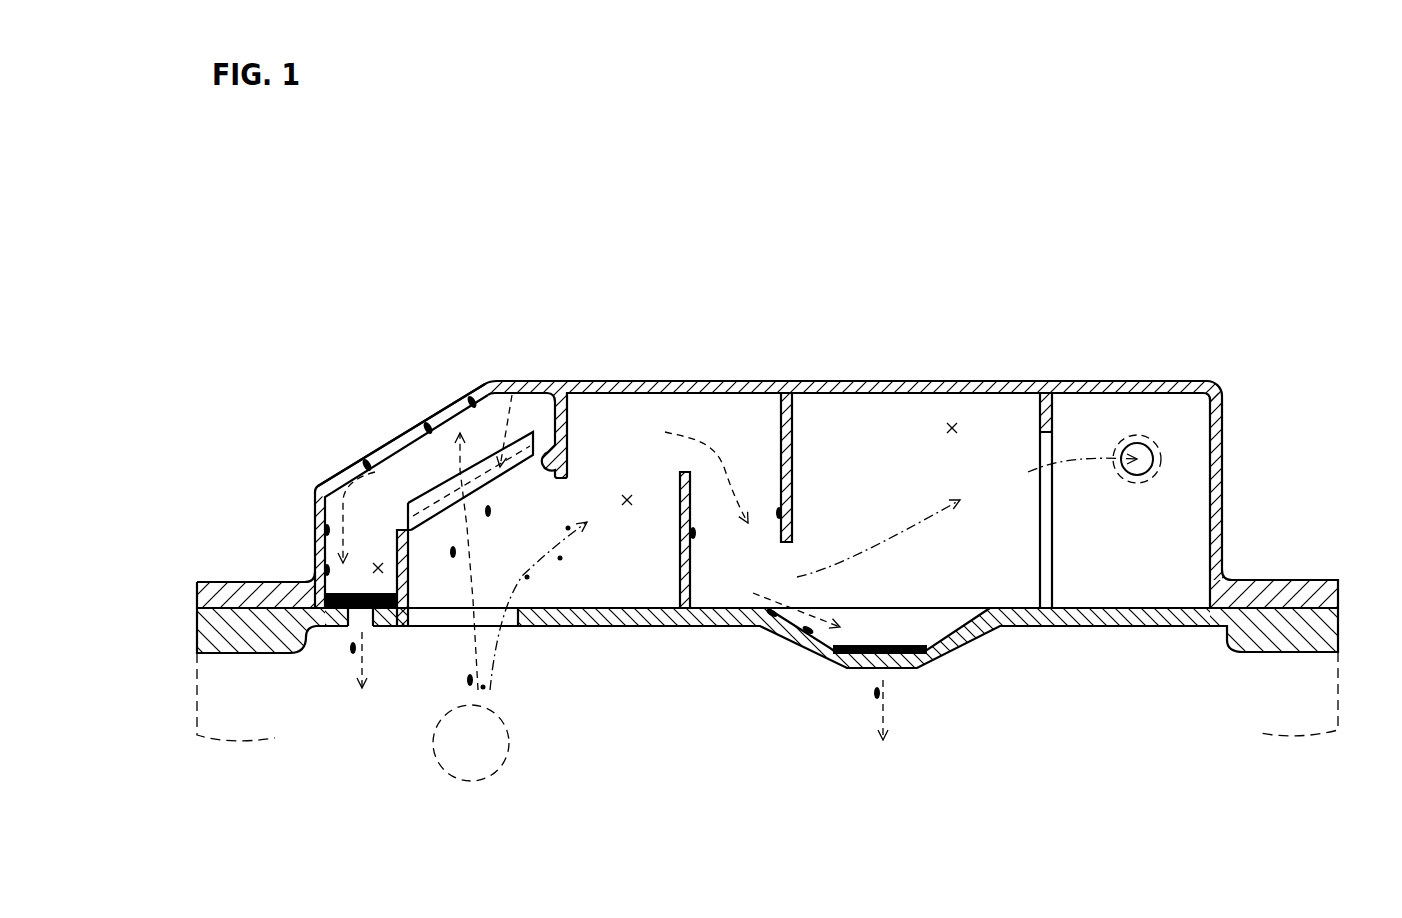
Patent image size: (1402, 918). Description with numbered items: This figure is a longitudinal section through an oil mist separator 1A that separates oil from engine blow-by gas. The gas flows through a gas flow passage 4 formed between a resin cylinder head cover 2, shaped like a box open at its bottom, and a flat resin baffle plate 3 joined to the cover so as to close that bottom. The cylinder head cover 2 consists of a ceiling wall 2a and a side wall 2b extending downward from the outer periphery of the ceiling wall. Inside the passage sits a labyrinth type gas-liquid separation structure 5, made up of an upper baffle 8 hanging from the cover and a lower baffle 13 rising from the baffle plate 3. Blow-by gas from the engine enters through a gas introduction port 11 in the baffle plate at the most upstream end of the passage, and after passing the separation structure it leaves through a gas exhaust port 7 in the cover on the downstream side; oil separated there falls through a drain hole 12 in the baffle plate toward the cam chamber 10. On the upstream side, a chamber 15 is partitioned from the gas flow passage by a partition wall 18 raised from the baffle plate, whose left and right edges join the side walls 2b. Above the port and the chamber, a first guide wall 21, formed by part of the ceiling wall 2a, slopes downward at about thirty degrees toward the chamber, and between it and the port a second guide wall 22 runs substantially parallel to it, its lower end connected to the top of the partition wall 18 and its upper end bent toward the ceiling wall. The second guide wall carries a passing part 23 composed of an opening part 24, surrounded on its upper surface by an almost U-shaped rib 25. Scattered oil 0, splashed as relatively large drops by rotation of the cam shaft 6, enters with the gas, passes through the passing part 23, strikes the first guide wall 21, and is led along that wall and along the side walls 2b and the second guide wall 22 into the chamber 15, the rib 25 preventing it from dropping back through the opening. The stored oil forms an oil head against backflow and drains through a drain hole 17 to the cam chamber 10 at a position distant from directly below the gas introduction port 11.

The oil mist separator 1A is at (376, 314).
The cylinder head cover 2 is at (761, 371).
The ceiling wall 2a is at (877, 380).
The side wall 2b is at (952, 428).
The baffle plate 3 is at (632, 643).
The gas flow passage 4 is at (627, 500).
The gas-liquid separation structure 5 is at (752, 432).
The cam shaft 6 is at (510, 735).
The gas exhaust port 7 is at (1155, 443).
The upper baffle 8 is at (793, 452).
The scattered oil 0 is at (315, 567).
The cam chamber 10 is at (795, 745).
The gas introduction port 11 is at (510, 630).
The drain hole 12 is at (887, 663).
The lower baffle 13 is at (680, 550).
The chamber 15 is at (380, 570).
The drain hole 17 is at (353, 616).
The partition wall 18 is at (410, 553).
The first guide wall 21 is at (401, 423).
The second guide wall 22 is at (513, 381).
The passing part 23 is at (382, 450).
The opening part 24 is at (384, 451).
The rib 25 is at (458, 400).